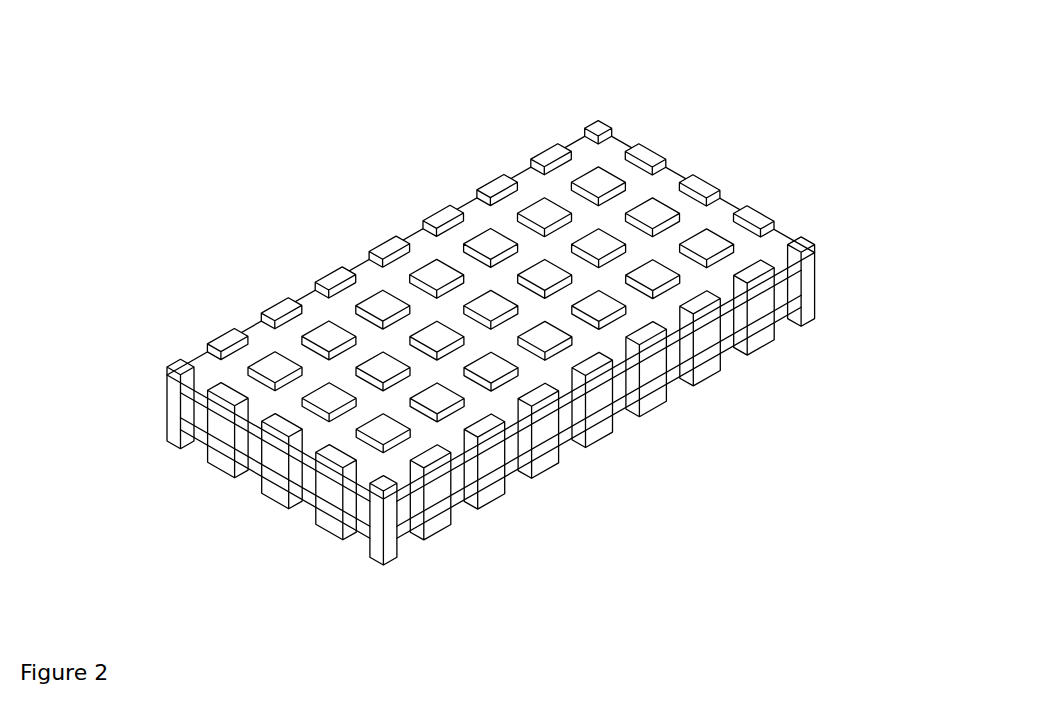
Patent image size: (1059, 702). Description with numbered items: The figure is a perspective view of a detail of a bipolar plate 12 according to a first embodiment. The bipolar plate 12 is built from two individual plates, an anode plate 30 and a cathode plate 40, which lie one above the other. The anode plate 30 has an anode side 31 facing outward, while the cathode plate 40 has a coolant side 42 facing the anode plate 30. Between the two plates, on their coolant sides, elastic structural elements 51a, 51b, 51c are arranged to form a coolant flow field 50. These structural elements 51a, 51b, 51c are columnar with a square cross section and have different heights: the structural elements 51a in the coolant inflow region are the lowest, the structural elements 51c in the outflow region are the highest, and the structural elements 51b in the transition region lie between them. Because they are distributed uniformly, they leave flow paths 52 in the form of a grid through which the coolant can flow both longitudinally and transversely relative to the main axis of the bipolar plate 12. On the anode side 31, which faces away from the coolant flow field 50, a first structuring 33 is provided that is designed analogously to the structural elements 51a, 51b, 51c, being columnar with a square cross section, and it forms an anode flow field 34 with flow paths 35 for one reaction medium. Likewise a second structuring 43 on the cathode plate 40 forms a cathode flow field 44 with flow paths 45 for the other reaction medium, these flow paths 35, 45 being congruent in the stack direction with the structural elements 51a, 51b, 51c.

The bipolar plate 12 is at (493, 326).
The anode plate 30 is at (686, 75).
The anode side 31 is at (770, 246).
The first structuring 33 is at (605, 178).
The anode flow field 34 is at (544, 182).
The flow paths 35 is at (216, 374).
The cathode plate 40 is at (698, 376).
The coolant side 42 is at (621, 396).
The second structuring 43 is at (541, 466).
The cathode flow field 44 is at (298, 524).
The flow paths 45 is at (185, 459).
The coolant flow field 50 is at (791, 296).
The structural elements 51a is at (768, 310).
The structural elements 51b is at (595, 401).
The structural elements 51c is at (464, 526).
The flow paths 52 is at (250, 456).